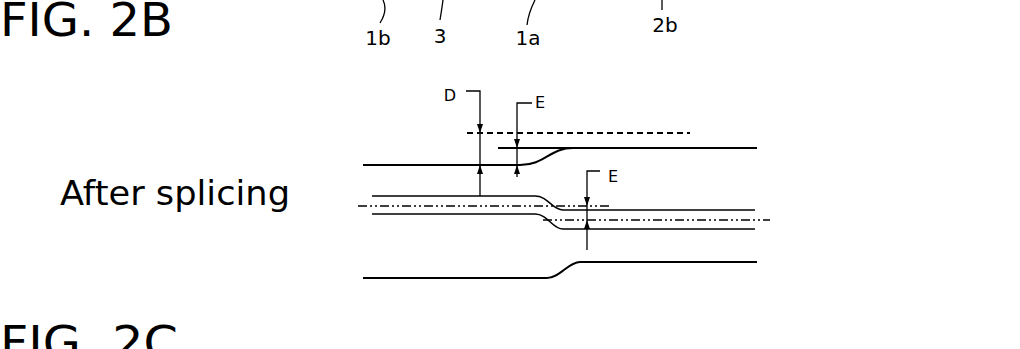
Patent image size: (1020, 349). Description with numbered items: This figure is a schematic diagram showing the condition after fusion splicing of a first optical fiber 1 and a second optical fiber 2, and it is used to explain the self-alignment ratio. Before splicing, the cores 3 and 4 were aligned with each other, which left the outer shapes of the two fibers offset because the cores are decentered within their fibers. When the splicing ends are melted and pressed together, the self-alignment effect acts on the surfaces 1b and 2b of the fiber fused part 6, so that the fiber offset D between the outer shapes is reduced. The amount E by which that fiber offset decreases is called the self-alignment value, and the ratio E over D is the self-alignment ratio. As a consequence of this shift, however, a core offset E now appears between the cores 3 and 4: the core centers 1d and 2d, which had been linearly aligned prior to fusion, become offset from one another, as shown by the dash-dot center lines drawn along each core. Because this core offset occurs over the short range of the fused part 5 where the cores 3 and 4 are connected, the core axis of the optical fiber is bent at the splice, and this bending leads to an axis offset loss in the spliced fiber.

The first optical fiber 1 is at (431, 160).
The second optical fiber 2 is at (700, 142).
The surface of the first optical fiber 1b is at (453, 280).
The core center of the first optical fiber 1d is at (345, 207).
The surface of the second optical fiber 2b is at (657, 263).
The core center of the second optical fiber 2d is at (753, 218).
The core of the first optical fiber 3 is at (500, 208).
The core of the second optical fiber 4 is at (703, 227).
The fused part of the cores 5 is at (560, 223).
The fiber fused part 6 is at (557, 270).